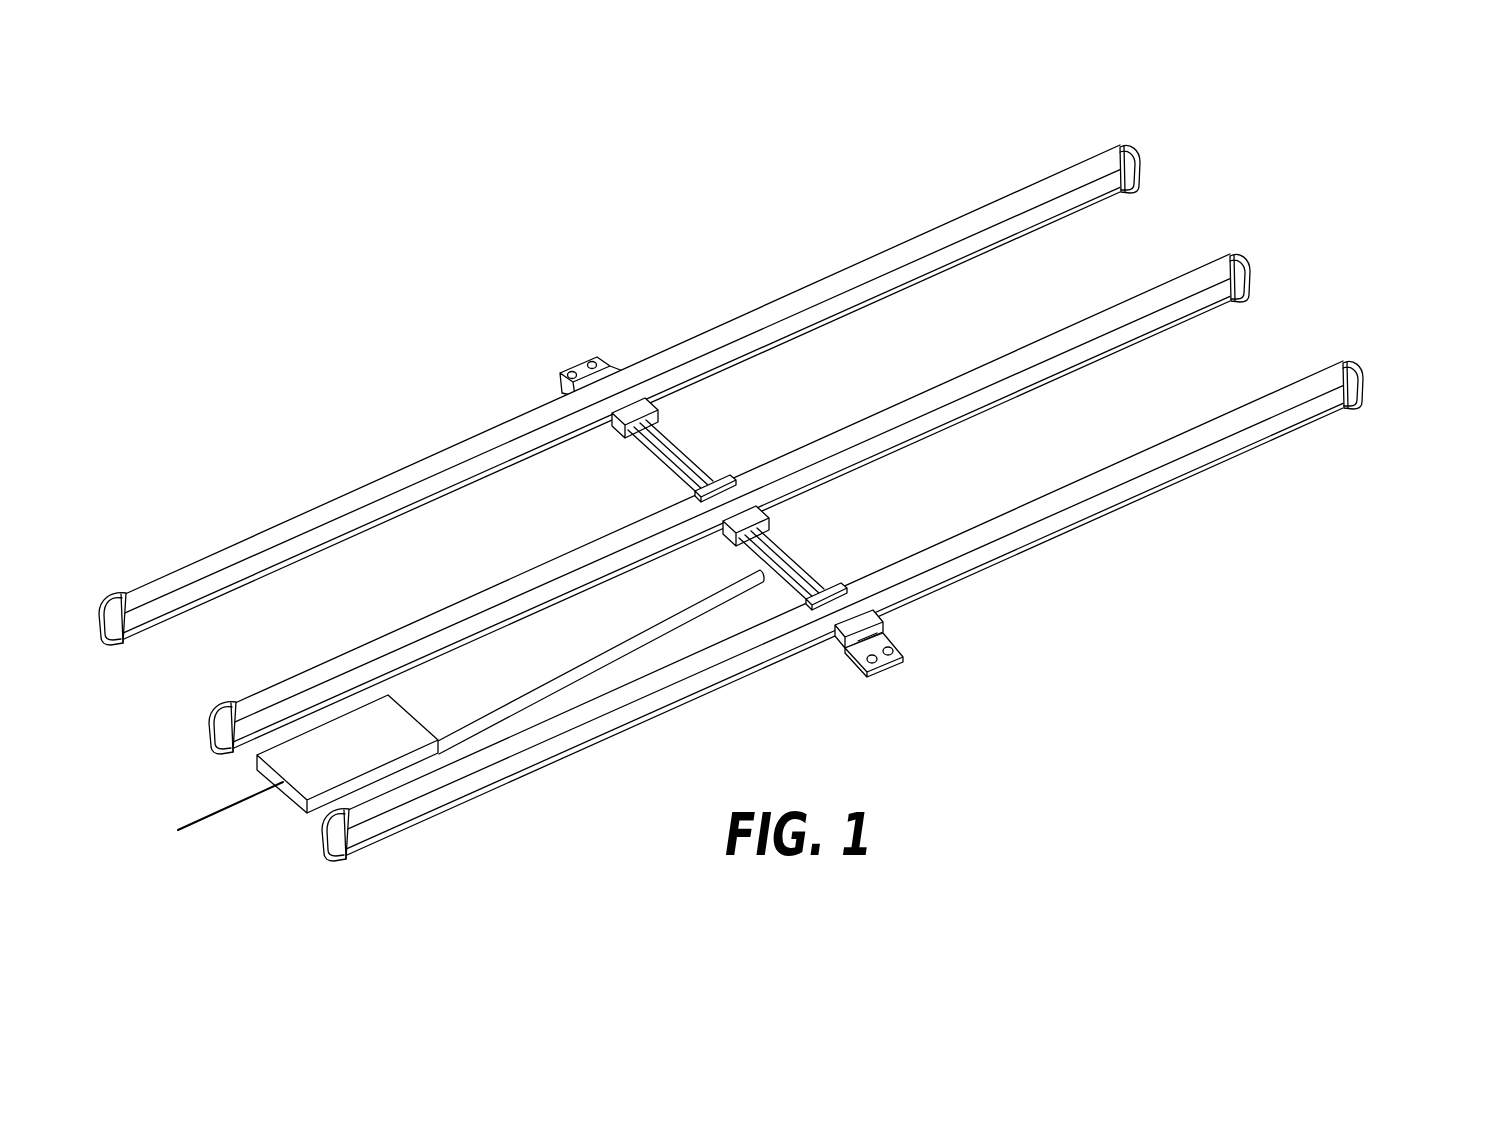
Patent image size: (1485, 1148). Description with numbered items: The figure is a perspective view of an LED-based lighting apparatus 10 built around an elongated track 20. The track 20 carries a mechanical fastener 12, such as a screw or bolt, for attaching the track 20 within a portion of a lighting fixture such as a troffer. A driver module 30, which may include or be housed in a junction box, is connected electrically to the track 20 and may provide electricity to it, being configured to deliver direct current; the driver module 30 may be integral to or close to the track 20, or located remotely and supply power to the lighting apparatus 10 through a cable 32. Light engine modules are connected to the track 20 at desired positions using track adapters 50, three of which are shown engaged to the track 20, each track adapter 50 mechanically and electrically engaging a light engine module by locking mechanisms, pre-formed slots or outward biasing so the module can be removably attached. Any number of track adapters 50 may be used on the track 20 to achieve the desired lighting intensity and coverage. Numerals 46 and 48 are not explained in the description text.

The LED-based lighting apparatus 10 is at (783, 503).
The mechanical fastener 12 is at (911, 676).
The track 20 is at (696, 449).
The driver module 30 is at (236, 777).
The cable 32 is at (546, 670).
The tube upper surface 46 is at (898, 415).
The tube side channel 48 is at (922, 434).
The track adapter 50 is at (824, 655).